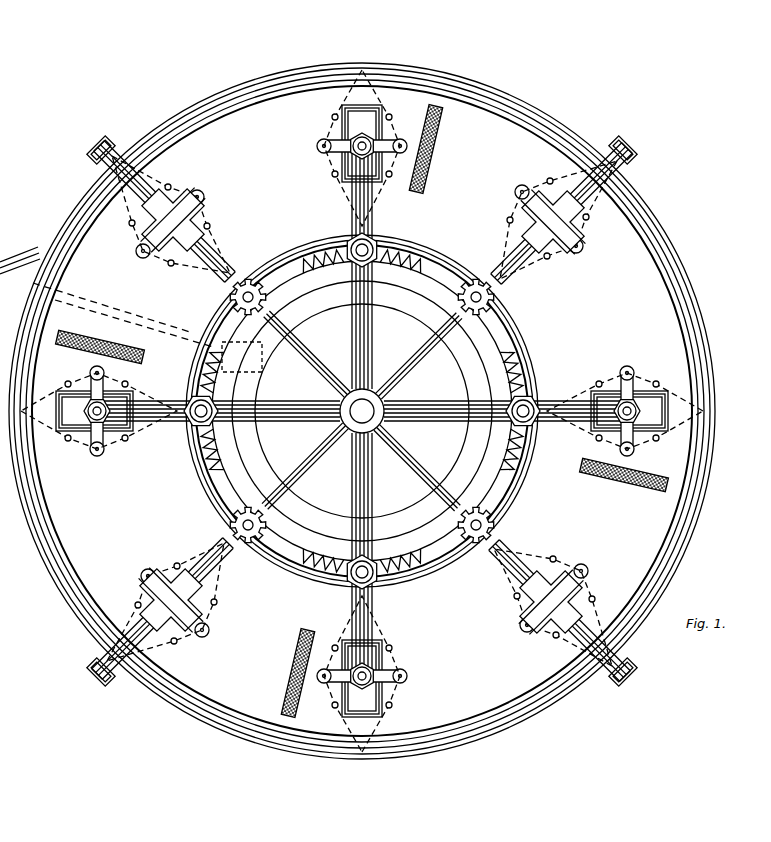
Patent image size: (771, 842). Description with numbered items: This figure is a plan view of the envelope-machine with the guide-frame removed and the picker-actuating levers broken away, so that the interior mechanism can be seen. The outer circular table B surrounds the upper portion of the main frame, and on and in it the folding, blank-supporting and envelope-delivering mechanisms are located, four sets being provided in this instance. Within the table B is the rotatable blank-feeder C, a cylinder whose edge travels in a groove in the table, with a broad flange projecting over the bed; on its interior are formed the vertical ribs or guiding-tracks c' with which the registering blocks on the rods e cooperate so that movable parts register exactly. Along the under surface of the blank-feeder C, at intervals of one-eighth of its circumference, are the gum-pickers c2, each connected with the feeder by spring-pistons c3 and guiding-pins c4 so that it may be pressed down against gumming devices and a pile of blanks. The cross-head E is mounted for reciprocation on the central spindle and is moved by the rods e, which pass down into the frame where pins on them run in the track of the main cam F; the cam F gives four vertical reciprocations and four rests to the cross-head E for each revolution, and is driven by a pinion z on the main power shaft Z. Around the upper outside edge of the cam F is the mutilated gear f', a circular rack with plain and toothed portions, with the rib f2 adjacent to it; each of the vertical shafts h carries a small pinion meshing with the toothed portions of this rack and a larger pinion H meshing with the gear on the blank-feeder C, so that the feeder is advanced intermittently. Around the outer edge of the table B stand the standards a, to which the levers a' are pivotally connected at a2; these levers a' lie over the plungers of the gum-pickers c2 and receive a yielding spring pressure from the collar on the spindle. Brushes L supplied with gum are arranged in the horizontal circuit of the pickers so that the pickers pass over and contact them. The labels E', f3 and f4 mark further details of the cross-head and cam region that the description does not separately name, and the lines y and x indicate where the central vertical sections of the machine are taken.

The table B is at (370, 411).
The blank-feeder C is at (373, 410).
The cross-head E is at (362, 411).
The cross bar of bracket E' is at (362, 411).
The main cam F is at (464, 479).
The larger pinion H is at (266, 297).
The brushes L is at (93, 338).
The standards a is at (165, 212).
The levers a' is at (362, 412).
The pivotal connection a2 is at (110, 149).
The vertical ribs, grooves, or guiding-tracks c' is at (362, 410).
The pickers c2 is at (362, 108).
The spring-pistons c3 is at (362, 410).
The guiding-pins c4 is at (362, 411).
The rods e is at (374, 250).
The mutilated gear f' is at (357, 411).
The rib f2 is at (420, 275).
The ring segment f3 is at (292, 497).
The ring segment f4 is at (318, 548).
The shafts h is at (258, 287).
The section lines x is at (356, 411).
The section lines y is at (547, 412).
The pinion z is at (106, 294).
The main or power shaft Z is at (250, 359).